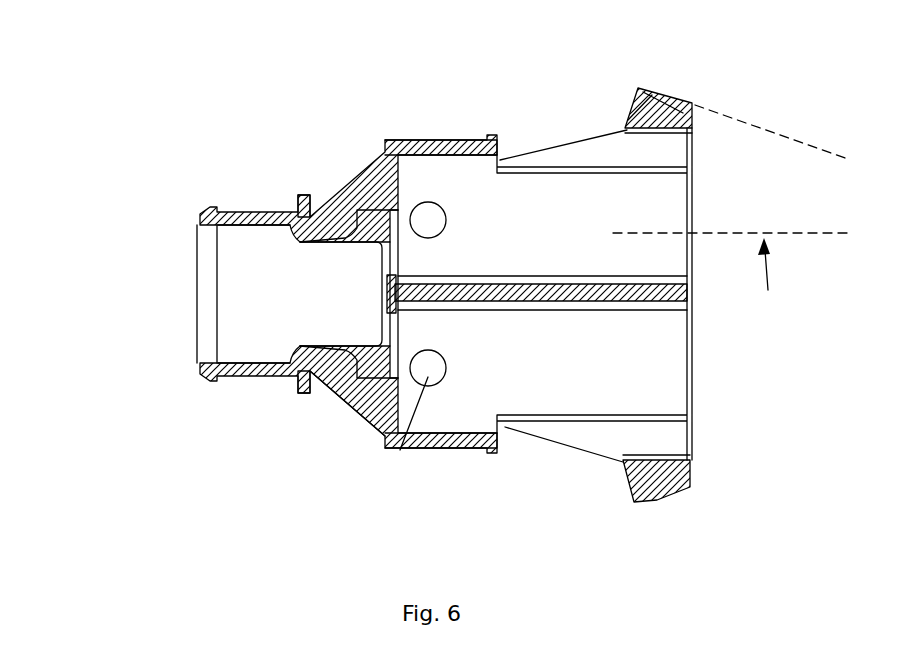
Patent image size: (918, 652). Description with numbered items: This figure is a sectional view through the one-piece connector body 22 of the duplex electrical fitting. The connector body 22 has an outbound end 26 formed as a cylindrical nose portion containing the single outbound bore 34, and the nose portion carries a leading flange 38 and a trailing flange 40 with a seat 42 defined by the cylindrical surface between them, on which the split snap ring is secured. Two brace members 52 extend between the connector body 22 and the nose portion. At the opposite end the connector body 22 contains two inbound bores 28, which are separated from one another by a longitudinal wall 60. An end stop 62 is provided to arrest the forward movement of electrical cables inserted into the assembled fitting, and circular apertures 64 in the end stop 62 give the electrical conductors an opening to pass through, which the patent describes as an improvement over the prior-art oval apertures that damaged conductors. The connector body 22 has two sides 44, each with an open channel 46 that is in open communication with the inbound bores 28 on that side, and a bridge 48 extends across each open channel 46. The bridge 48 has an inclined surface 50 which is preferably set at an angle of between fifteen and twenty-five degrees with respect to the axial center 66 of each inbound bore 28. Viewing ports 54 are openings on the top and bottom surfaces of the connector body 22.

The connector body 22 is at (165, 171).
The outbound end 26 is at (197, 293).
The inbound bores 28 is at (594, 294).
The outbound bore 34 is at (308, 294).
The leading flange 38 is at (212, 383).
The trailing flange 40 is at (305, 195).
The seat 42 is at (267, 212).
The sides 44 is at (440, 140).
The open channel 46 is at (572, 160).
The bridge 48 is at (640, 88).
The inclined surface 50 is at (665, 98).
The brace members 52 is at (365, 413).
The viewing ports 54 is at (400, 450).
The longitudinal wall 60 is at (630, 300).
The end stop 62 is at (387, 295).
The circular apertures 64 is at (397, 235).
The axial center 66 is at (810, 235).